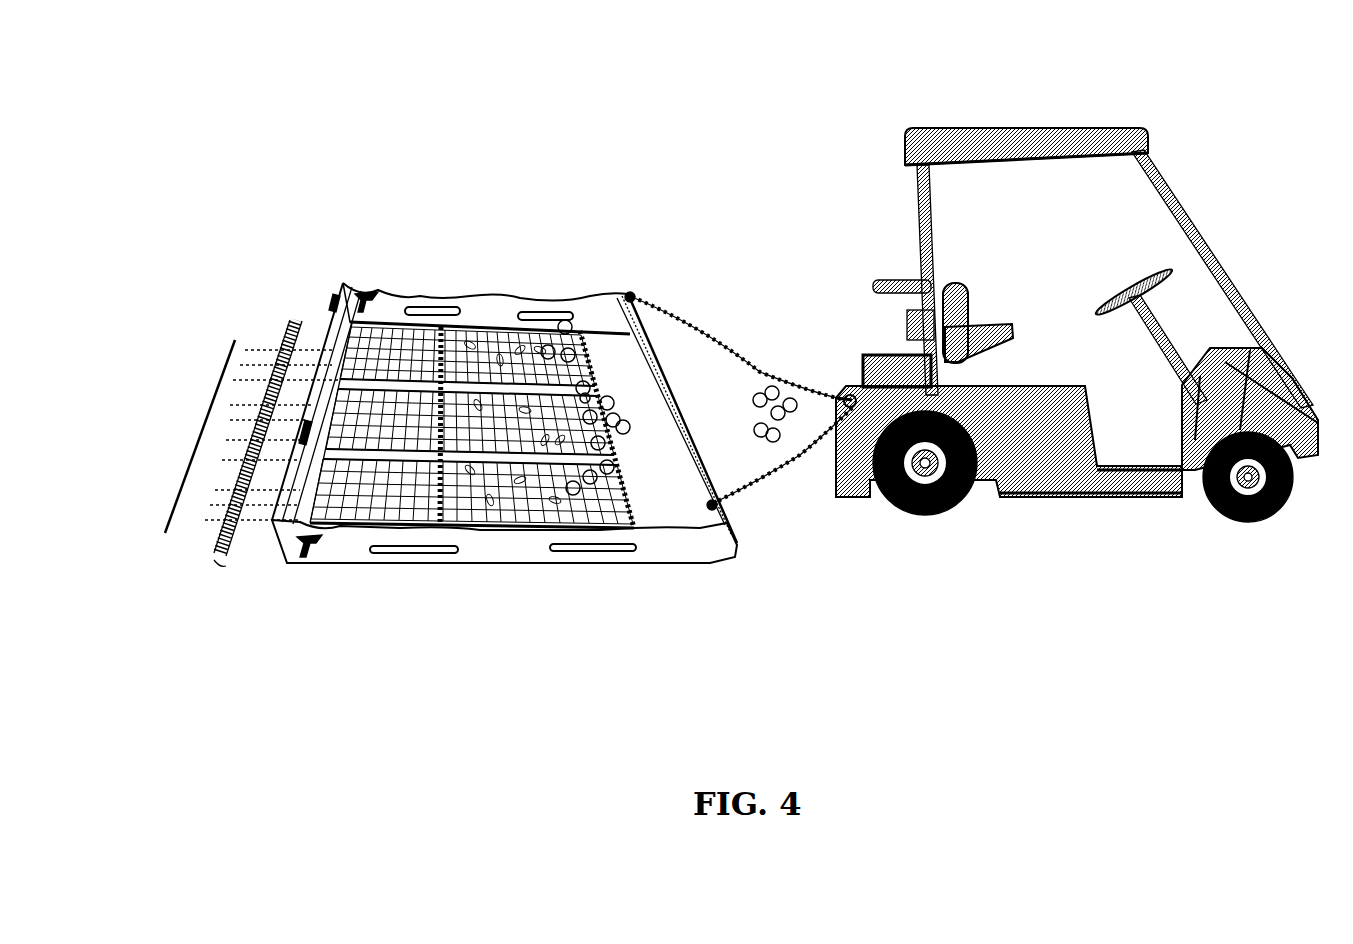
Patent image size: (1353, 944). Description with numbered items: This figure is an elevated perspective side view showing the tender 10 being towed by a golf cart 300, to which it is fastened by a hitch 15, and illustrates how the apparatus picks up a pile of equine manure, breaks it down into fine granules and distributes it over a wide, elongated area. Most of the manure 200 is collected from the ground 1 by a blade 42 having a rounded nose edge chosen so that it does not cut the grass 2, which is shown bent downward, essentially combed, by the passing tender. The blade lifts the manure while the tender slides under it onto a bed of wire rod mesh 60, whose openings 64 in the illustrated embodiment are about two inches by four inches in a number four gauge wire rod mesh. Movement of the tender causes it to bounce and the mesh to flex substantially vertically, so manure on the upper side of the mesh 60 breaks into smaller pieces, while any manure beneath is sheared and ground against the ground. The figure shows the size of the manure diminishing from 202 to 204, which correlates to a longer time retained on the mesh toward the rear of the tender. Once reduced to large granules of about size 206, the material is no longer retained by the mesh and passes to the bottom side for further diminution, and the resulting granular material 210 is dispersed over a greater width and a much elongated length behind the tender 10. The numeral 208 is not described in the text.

The ground 1 is at (198, 578).
The grass 2 is at (239, 565).
The tender 10 is at (511, 414).
The hitch 15 is at (847, 402).
The blade 42 is at (653, 533).
The mesh 60 is at (472, 425).
The opening 64 is at (555, 503).
The manure 200 is at (746, 409).
The manure (initial size) 202 is at (640, 415).
The manure (diminished size) 204 is at (480, 510).
The large granules 206 is at (437, 510).
The front rail 208 is at (381, 520).
The granular material 210 is at (224, 567).
The golf cart 300 is at (1056, 325).